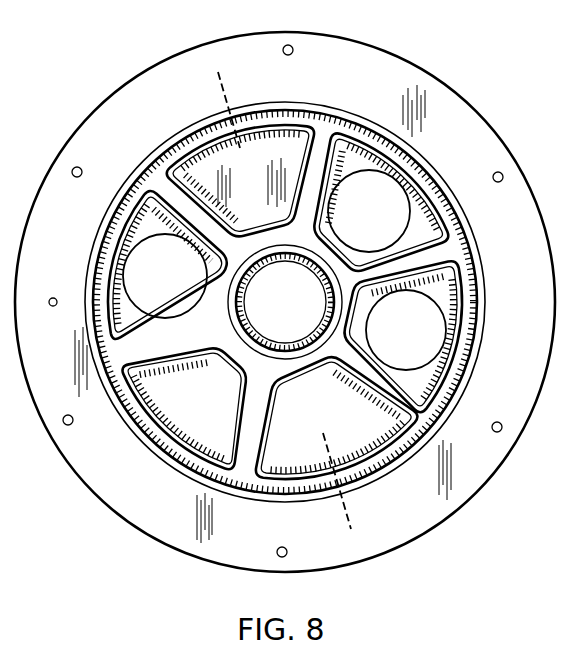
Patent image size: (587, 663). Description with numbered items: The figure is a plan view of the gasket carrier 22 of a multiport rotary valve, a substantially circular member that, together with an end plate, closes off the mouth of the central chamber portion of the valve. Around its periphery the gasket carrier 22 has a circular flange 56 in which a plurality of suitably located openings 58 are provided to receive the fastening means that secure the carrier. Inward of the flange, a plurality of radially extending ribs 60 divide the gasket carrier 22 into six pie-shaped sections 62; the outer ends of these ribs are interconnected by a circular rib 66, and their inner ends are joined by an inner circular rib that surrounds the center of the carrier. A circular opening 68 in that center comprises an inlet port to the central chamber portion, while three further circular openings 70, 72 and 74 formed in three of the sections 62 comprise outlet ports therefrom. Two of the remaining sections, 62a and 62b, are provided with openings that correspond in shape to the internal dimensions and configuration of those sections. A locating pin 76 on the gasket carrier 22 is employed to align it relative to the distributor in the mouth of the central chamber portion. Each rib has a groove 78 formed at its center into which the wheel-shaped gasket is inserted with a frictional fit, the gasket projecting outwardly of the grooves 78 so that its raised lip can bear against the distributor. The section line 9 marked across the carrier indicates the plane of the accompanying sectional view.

The gasket carrier 22 is at (288, 303).
The circular flange 56 is at (420, 80).
The openings 58 is at (291, 45).
The radially extending ribs 60 is at (288, 312).
The pie-shaped sections 62 is at (425, 228).
The pie-shaped section 62a is at (300, 460).
The pie-shaped section 62b is at (178, 422).
The circular rib 66 is at (327, 110).
The circular opening 68 is at (257, 330).
The circular opening 70 is at (446, 332).
The circular opening 72 is at (402, 186).
The circular opening 74 is at (128, 290).
The locating pin 76 is at (53, 297).
The groove 78 is at (333, 263).
The section line 9- 9 is at (193, 79).